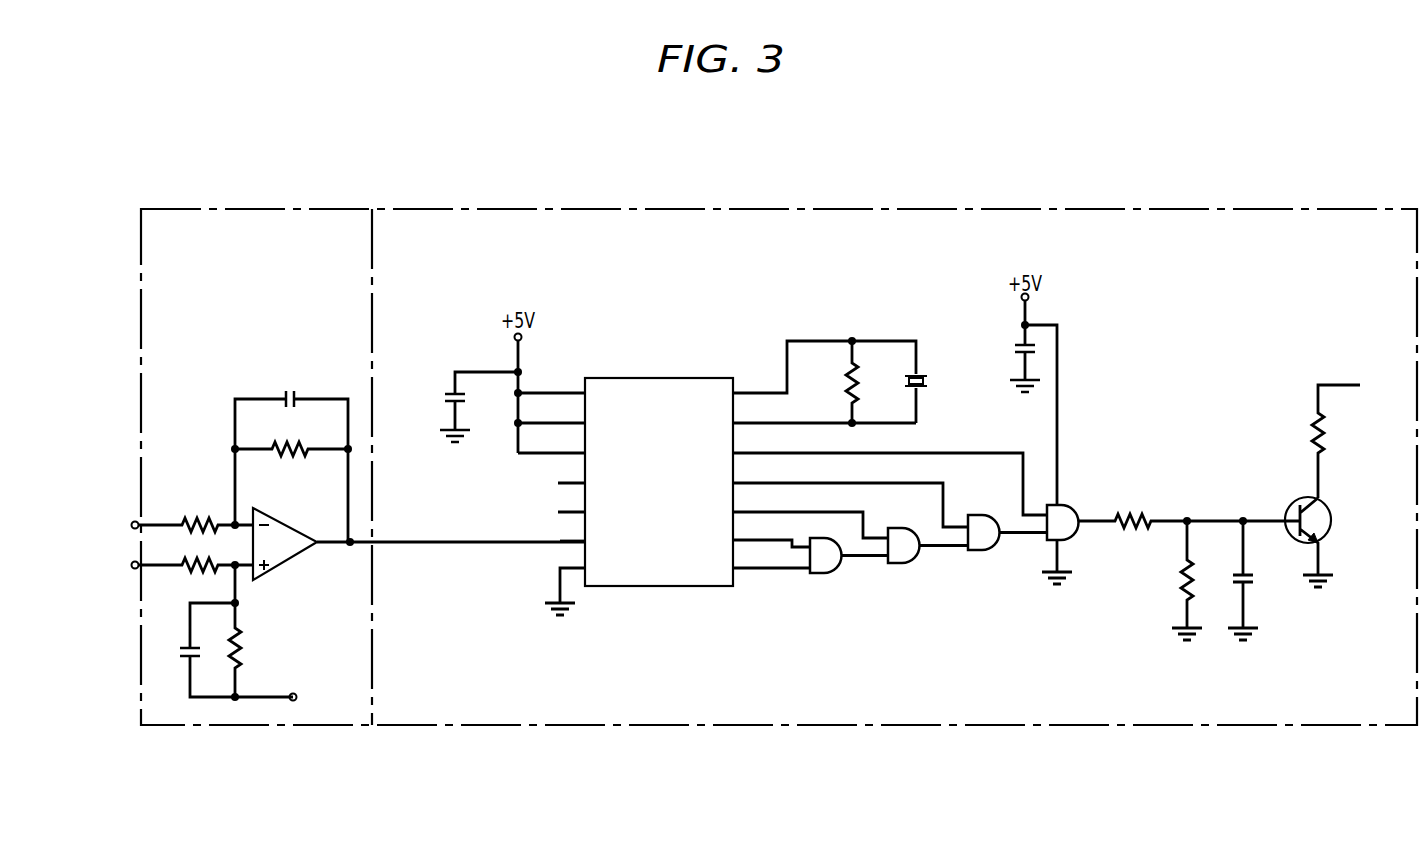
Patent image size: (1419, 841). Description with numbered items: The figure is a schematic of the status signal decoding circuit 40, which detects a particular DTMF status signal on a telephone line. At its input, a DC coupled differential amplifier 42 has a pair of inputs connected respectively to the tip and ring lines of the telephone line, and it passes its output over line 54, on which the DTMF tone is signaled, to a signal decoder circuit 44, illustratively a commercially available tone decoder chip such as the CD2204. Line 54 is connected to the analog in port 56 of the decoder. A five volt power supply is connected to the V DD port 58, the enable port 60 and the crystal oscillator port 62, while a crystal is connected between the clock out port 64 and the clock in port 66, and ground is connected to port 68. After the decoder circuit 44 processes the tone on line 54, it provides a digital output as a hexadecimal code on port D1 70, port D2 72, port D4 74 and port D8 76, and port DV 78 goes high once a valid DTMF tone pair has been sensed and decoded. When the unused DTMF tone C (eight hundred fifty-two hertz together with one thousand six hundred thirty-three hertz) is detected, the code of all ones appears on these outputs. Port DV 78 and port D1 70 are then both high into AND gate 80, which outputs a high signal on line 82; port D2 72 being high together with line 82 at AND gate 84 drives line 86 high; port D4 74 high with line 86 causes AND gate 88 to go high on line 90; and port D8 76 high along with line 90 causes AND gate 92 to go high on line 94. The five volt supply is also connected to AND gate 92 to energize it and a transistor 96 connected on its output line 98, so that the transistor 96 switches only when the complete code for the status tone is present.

The status signal decoding circuit 40 is at (452, 209).
The DC coupled differential amplifier 42 is at (256, 252).
The signal decoder circuit 44 is at (648, 378).
The line 54 is at (428, 544).
The analog in port 56 is at (585, 540).
The V DD port 58 is at (585, 390).
The enable port 60 is at (585, 421).
The crystal oscillator port 62 is at (585, 451).
The clock out port 64 is at (735, 393).
The clock in port 66 is at (735, 423).
The ground port 68 is at (577, 568).
The port D1 70 is at (735, 540).
The port D2 72 is at (735, 512).
The port D4 74 is at (735, 483).
The port D8 76 is at (735, 453).
The port DV 78 is at (738, 570).
The AND gate 80 is at (826, 574).
The line 82 is at (862, 557).
The AND gate 84 is at (898, 528).
The line 86 is at (934, 547).
The AND gate 88 is at (976, 515).
The line 90 is at (1012, 534).
The AND gate 92 is at (1073, 505).
The line 94 is at (1094, 523).
The transistor 96 is at (1331, 518).
The output line 98 is at (1343, 385).